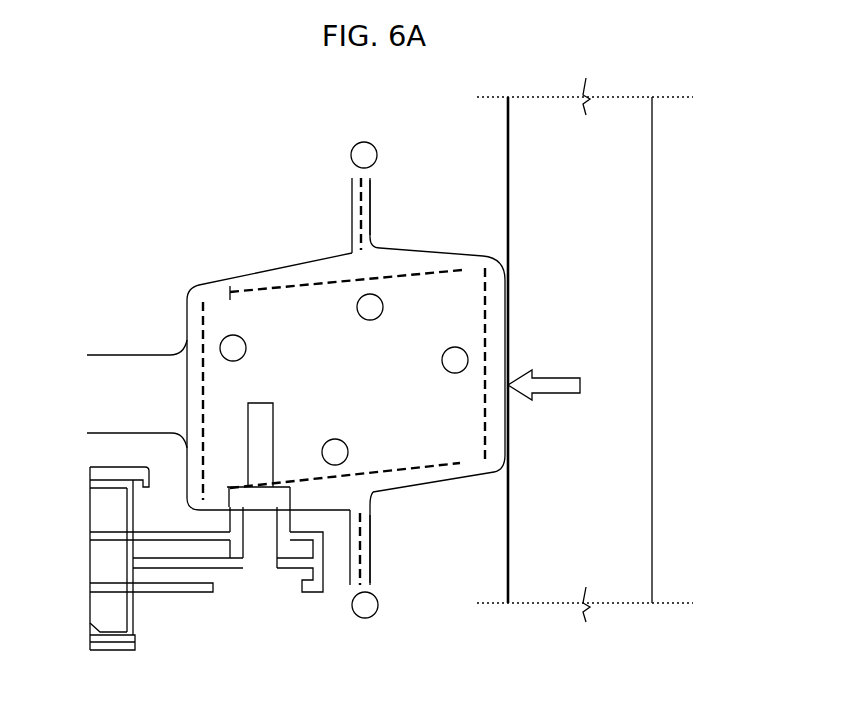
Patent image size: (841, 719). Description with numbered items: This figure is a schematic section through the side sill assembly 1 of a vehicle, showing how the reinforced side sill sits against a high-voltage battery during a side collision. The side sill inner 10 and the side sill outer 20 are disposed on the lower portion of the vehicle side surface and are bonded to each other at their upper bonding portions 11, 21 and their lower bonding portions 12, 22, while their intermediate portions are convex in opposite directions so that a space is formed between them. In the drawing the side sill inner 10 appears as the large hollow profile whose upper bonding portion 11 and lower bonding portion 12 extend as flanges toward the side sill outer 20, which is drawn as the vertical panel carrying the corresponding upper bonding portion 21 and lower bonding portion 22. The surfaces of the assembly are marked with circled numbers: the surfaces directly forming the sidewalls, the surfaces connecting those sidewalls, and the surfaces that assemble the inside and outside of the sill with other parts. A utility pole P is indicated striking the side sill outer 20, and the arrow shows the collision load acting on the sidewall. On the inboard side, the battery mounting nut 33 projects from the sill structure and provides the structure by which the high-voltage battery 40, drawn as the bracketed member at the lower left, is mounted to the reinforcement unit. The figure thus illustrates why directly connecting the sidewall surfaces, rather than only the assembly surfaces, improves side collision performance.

The side sill assembly 1 is at (460, 120).
The side sill inner 10 is at (186, 396).
The upper bonding portion 11 is at (352, 215).
The lower bonding portion 12 is at (350, 550).
The side sill outer 20 is at (510, 322).
The upper bonding portion 21 is at (371, 195).
The lower bonding portion 22 is at (370, 545).
The battery mounting nut 33 is at (253, 433).
The high-voltage battery 40 is at (185, 570).
The utility pole P is at (555, 588).